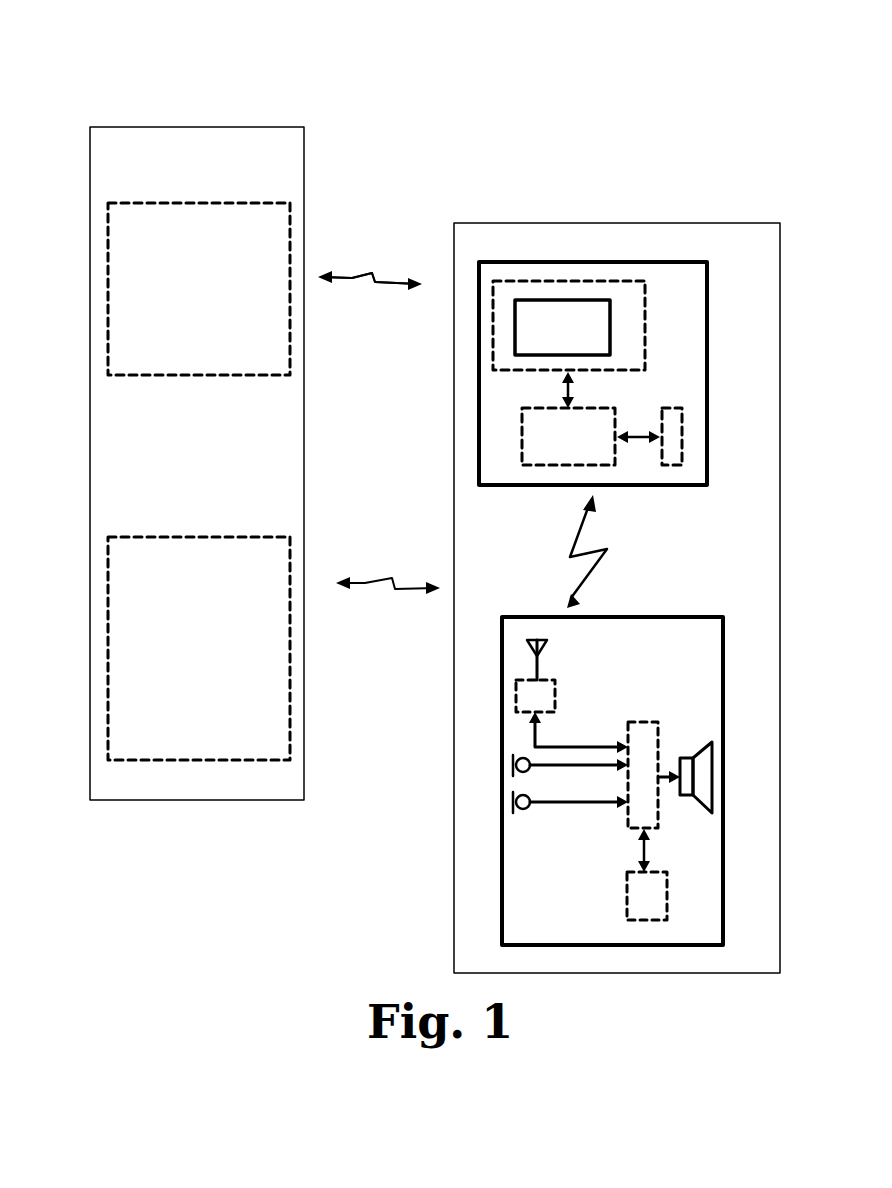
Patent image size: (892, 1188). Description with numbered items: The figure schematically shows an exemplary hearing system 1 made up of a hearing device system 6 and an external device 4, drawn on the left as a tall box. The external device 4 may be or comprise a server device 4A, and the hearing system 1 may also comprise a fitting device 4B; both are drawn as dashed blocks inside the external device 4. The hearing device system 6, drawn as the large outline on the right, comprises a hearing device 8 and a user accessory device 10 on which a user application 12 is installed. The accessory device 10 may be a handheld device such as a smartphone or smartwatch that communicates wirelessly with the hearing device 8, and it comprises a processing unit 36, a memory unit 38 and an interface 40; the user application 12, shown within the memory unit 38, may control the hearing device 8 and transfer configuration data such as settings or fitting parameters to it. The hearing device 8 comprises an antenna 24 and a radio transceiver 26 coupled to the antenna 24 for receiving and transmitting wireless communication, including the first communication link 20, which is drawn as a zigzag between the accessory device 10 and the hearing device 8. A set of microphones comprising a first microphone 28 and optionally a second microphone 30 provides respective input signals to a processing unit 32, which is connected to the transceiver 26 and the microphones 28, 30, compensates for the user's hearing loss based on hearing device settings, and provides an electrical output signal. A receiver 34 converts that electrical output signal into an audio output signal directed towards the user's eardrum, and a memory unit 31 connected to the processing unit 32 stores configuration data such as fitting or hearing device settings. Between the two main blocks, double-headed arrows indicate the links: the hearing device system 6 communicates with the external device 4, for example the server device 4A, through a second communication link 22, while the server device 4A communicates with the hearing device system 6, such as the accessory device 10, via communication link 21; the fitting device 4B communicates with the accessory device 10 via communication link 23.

The hearing system 1 is at (357, 105).
The external device 4 is at (173, 127).
The server device 4A is at (183, 203).
The fitting device 4B is at (205, 760).
The hearing device system 6 is at (553, 223).
The hearing device 8 is at (620, 945).
The user accessory device 10 is at (643, 262).
The user application 12 is at (572, 300).
The first communication link 20 is at (578, 532).
The communication link 21 is at (352, 277).
The second communication link 22 is at (370, 278).
The communication link 23 is at (372, 583).
The antenna 24 is at (522, 642).
The radio transceiver 26 is at (516, 692).
The first microphone 28 is at (513, 762).
The second microphone 30 is at (513, 802).
The memory unit 31 is at (627, 892).
The processing unit 32 is at (643, 720).
The receiver 34 is at (707, 742).
The processing unit 36 is at (522, 433).
The memory unit 38 is at (493, 314).
The interface 40 is at (665, 465).